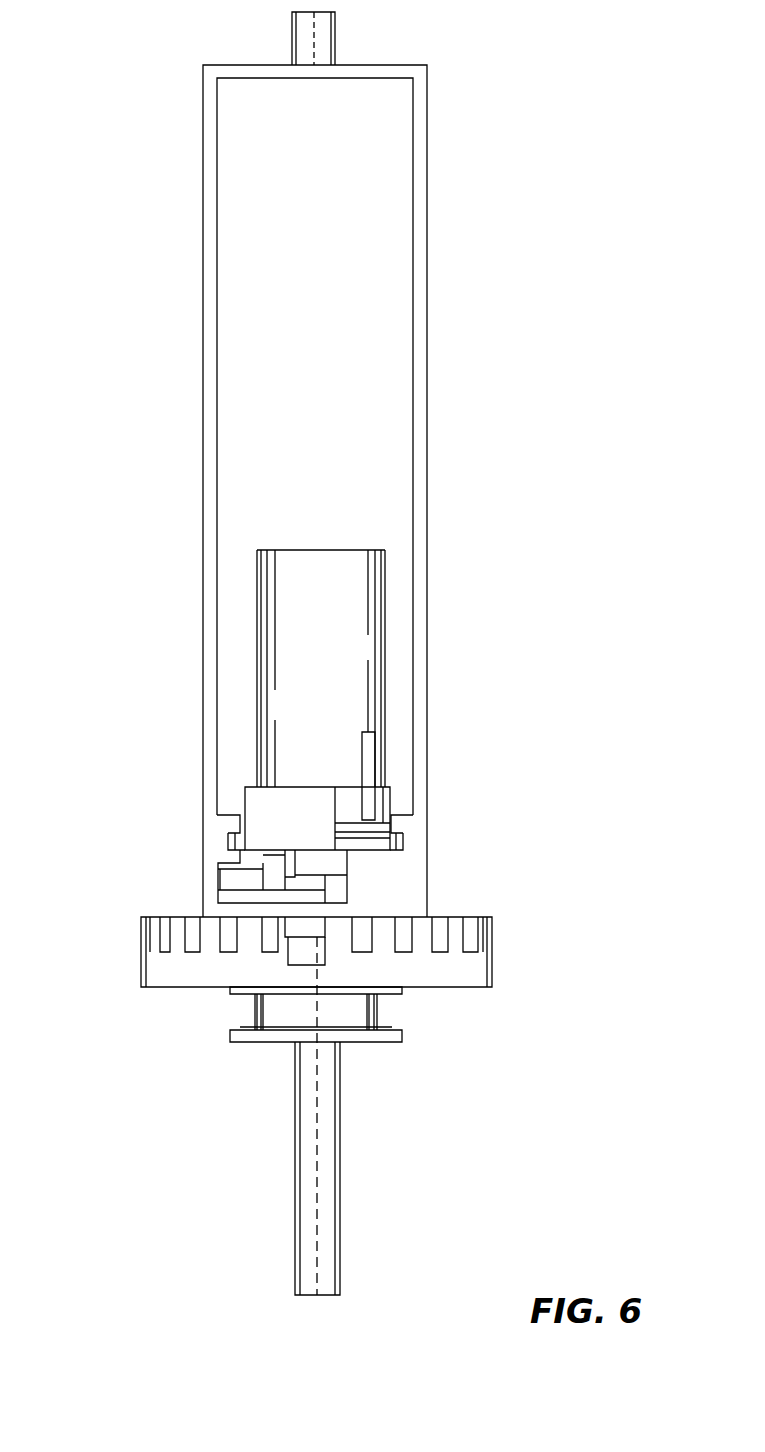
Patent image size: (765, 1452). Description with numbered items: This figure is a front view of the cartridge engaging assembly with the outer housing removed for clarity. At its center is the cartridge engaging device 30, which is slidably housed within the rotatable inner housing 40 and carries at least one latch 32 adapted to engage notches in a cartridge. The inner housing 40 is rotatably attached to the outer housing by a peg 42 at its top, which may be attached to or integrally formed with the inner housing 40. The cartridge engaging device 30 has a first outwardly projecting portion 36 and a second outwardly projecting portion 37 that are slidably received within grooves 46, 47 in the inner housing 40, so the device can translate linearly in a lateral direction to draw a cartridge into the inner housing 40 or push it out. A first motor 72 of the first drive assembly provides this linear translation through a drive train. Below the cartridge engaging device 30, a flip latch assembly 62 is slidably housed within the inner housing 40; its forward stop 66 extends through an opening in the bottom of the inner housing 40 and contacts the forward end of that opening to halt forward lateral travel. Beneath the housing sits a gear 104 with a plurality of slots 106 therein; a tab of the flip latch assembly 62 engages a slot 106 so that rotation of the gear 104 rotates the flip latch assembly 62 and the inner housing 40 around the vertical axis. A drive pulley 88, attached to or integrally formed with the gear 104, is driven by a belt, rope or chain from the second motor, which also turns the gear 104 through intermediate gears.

The cartridge engaging device 30 is at (368, 645).
The latch 32 is at (370, 797).
The first outwardly projecting portion 36 is at (228, 846).
The second outwardly projecting portion 37 is at (405, 847).
The inner housing 40 is at (203, 272).
The peg 42 is at (292, 36).
The groove 46 is at (228, 835).
The groove 47 is at (405, 835).
The flip latch assembly 62 is at (212, 892).
The forward stop 66 is at (316, 956).
The first motor 72 is at (360, 550).
The drive pulley 88 is at (255, 1010).
The gear 104 is at (273, 949).
The slots 106 is at (130, 930).